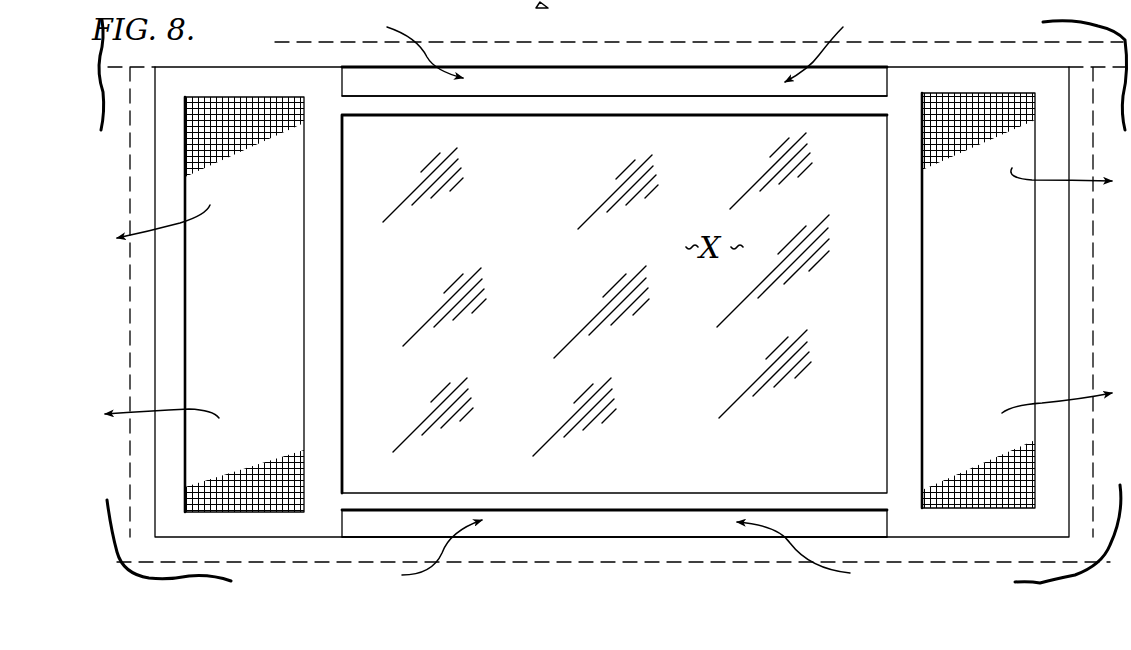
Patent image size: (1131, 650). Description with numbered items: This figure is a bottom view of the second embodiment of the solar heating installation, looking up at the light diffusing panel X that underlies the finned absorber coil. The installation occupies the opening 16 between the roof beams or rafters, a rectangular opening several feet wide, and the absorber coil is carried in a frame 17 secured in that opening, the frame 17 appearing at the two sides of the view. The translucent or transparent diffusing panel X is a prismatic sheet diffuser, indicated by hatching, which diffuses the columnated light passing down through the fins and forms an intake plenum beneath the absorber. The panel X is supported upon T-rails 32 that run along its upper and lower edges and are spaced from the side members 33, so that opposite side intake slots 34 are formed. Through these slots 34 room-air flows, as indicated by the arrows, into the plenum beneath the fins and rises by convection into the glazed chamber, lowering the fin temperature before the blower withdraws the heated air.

The opening 16 is at (643, 68).
The frame 17 is at (317, 285).
The T-rails 32 is at (614, 277).
The side members 33 is at (502, 41).
The side intake slots 34 is at (726, 82).